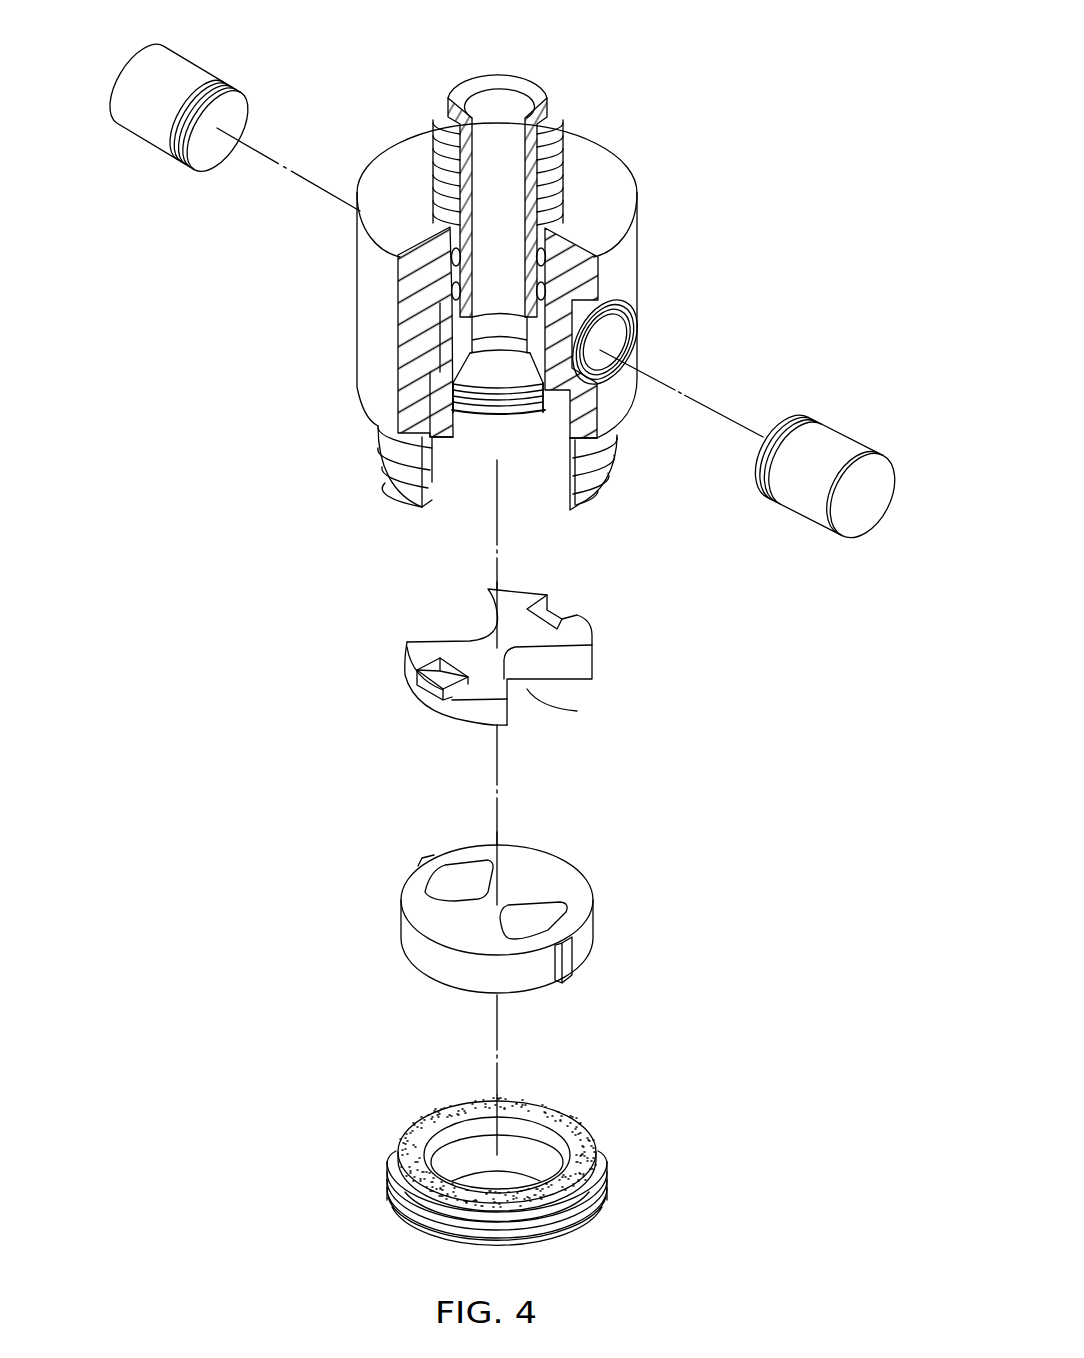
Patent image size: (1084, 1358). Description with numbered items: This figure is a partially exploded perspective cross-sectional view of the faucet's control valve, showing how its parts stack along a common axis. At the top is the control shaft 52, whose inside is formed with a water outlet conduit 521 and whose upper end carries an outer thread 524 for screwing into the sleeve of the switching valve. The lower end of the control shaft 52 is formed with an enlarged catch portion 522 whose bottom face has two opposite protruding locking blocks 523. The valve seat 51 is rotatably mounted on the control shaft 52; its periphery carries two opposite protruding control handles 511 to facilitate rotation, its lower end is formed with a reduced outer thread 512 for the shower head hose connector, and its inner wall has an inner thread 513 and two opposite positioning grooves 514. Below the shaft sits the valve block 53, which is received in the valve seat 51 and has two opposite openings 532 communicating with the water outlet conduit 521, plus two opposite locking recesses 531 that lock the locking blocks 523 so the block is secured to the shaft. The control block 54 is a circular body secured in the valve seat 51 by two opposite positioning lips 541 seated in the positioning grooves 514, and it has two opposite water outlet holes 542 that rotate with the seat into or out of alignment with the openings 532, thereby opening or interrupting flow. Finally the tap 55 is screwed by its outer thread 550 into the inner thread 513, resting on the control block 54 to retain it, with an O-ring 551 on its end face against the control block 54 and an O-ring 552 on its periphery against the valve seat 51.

The valve seat 51 is at (640, 251).
The control handle 511 is at (838, 440).
The outer thread 512 is at (383, 458).
The inner thread 513 is at (482, 398).
The positioning groove 514 is at (560, 507).
The control shaft 52 is at (552, 121).
The water outlet conduit 521 is at (512, 92).
The catch portion 522 is at (573, 408).
The locking block 523 is at (387, 480).
The outer thread 524 is at (551, 167).
The valve block 53 is at (398, 640).
The locking recess 531 is at (440, 687).
The opening 532 is at (530, 692).
The control block 54 is at (566, 862).
The positioning lip 541 is at (567, 958).
The water outlet hole 542 is at (463, 873).
The tap 55 is at (590, 1135).
The outer thread 550 is at (573, 1201).
The O-ring 551 is at (423, 1127).
The O-ring 552 is at (420, 1216).